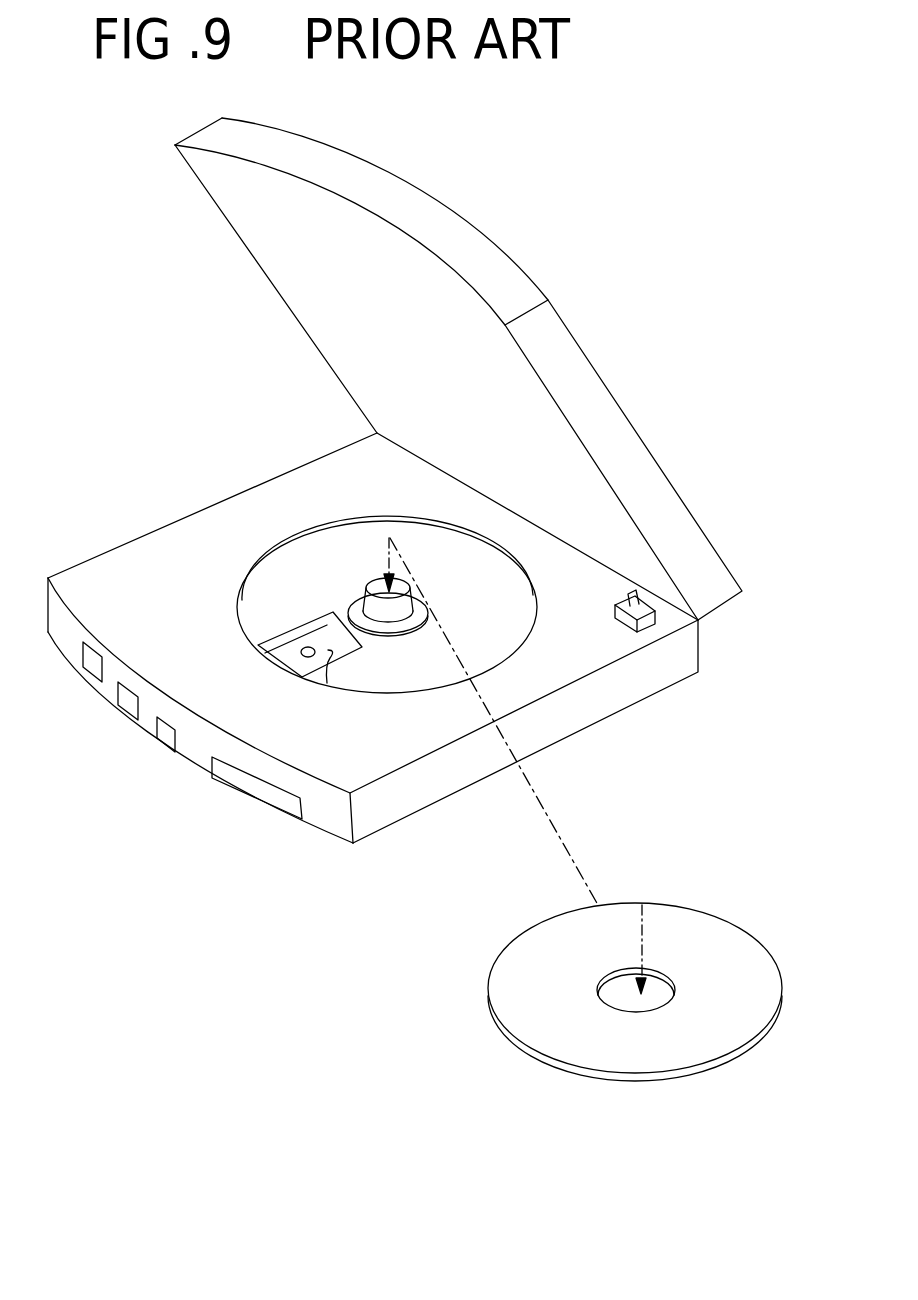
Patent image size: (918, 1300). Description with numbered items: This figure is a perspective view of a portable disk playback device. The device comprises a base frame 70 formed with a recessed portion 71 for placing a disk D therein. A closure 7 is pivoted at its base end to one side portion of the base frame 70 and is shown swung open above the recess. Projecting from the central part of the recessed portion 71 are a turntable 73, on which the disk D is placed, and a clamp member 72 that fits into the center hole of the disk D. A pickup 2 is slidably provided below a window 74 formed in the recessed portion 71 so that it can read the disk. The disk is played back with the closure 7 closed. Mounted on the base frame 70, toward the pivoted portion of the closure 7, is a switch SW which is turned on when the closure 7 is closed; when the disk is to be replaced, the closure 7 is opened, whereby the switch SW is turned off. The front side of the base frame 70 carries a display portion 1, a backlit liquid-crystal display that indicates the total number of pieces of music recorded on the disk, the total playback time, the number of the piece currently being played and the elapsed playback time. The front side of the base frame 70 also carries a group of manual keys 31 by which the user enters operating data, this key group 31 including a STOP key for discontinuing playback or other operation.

The closure 7 is at (500, 275).
The base frame 70 is at (592, 710).
The recessed portion 71 is at (300, 545).
The clamp member 72 is at (378, 582).
The turntable 73 is at (397, 637).
The window 74 is at (327, 683).
The pickup 2 is at (293, 650).
The display portion 1 is at (270, 802).
The group of manual keys 31 is at (105, 714).
The switch SW is at (647, 625).
The disc D is at (703, 917).